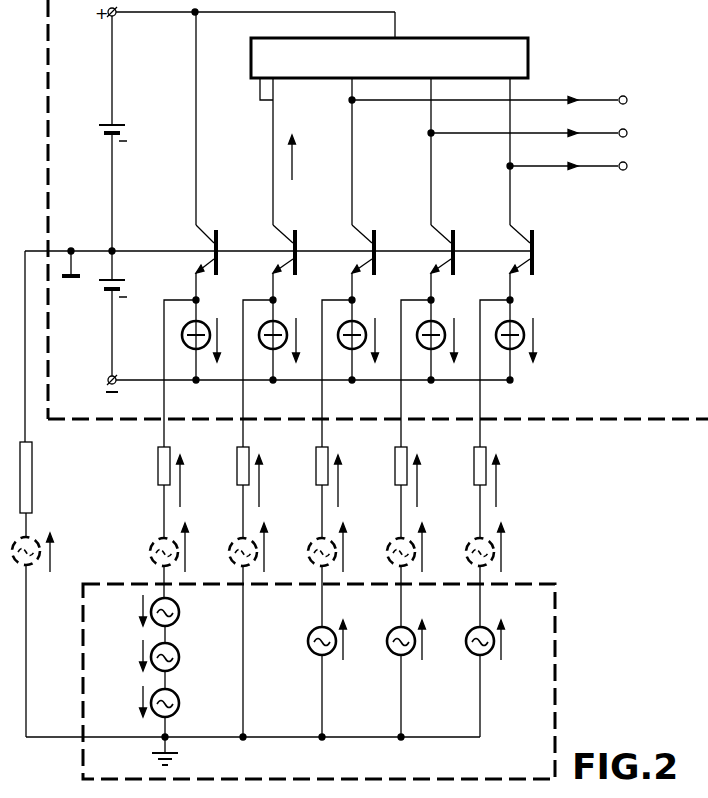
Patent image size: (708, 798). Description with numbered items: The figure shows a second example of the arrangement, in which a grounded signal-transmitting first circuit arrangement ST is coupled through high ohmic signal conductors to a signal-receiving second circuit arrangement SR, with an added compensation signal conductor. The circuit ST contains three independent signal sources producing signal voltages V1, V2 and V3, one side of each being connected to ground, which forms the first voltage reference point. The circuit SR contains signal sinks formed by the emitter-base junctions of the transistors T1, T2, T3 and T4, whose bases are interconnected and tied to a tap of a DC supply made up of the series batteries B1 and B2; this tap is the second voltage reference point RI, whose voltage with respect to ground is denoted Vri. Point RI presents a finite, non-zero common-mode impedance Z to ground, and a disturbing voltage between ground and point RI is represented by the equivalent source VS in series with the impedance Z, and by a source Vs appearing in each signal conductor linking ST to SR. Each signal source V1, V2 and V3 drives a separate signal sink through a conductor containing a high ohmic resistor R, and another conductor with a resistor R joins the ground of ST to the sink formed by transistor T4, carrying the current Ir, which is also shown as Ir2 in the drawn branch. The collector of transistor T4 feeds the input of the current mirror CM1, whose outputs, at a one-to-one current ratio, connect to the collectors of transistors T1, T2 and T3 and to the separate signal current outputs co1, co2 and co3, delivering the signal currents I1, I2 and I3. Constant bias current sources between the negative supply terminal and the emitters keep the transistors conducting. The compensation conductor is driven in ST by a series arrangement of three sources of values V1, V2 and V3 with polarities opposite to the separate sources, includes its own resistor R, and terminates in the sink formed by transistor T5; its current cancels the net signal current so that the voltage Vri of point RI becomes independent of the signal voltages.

The current mirror CM1 is at (440, 38).
The battery B1 is at (126, 128).
The battery B2 is at (126, 283).
The second voltage reference point RI is at (71, 248).
The voltage at the second voltage reference point Vri is at (126, 238).
The transistor T1 is at (371, 304).
The transistor T2 is at (450, 304).
The transistor T3 is at (529, 304).
The transistor T4 is at (292, 304).
The transistor T5 is at (214, 304).
The signal current I1 is at (583, 100).
The signal current I2 is at (583, 133).
The signal current I3 is at (583, 166).
The signal current output co1 is at (628, 100).
The signal current output co2 is at (628, 133).
The signal current output co3 is at (628, 166).
The current in the ground signal conductor Ir is at (293, 146).
The signal-receiving second circuit arrangement SR is at (626, 421).
The impedance Z is at (33, 460).
The disturbing voltage source VS is at (48, 552).
The high ohmic resistor R is at (158, 455).
The current Ir in T4 branch Ir2 is at (260, 485).
The disturbing voltage Vs is at (186, 553).
The signal-transmitting first circuit arrangement ST is at (556, 668).
The signal voltage V1 is at (180, 609).
The signal voltage V2 is at (180, 654).
The signal voltage V3 is at (180, 700).